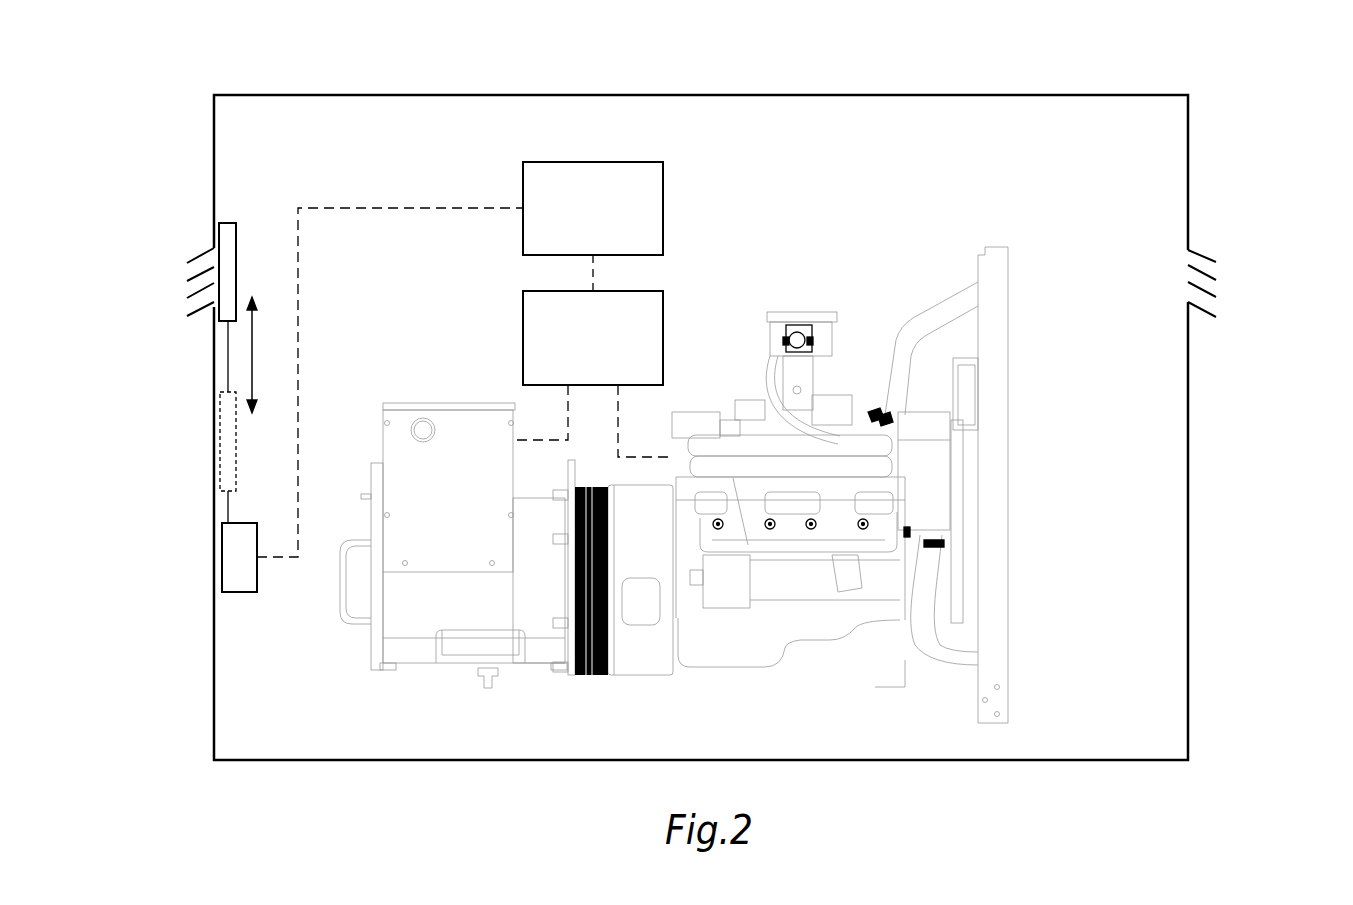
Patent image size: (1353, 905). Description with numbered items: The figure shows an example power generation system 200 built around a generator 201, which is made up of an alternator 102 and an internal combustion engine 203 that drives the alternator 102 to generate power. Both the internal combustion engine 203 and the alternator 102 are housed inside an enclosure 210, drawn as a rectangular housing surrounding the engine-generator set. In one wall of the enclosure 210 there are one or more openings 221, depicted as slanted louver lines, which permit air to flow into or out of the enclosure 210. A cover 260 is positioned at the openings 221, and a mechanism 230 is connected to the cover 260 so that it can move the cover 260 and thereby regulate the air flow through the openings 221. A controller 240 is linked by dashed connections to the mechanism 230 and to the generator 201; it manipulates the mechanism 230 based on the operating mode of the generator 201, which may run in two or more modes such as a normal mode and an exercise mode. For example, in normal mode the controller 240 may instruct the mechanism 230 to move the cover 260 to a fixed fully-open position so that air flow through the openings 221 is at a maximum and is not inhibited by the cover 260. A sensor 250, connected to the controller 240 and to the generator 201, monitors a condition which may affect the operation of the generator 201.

The power generation system 200 is at (1273, 63).
The generator 201 is at (770, 245).
The internal combustion engine 203 is at (728, 668).
The alternator 102 is at (412, 655).
The enclosure 210 is at (1190, 663).
The openings 221 is at (188, 304).
The mechanism 230 is at (240, 593).
The controller 240 is at (661, 161).
The sensor 250 is at (661, 290).
The cover 260 is at (236, 223).